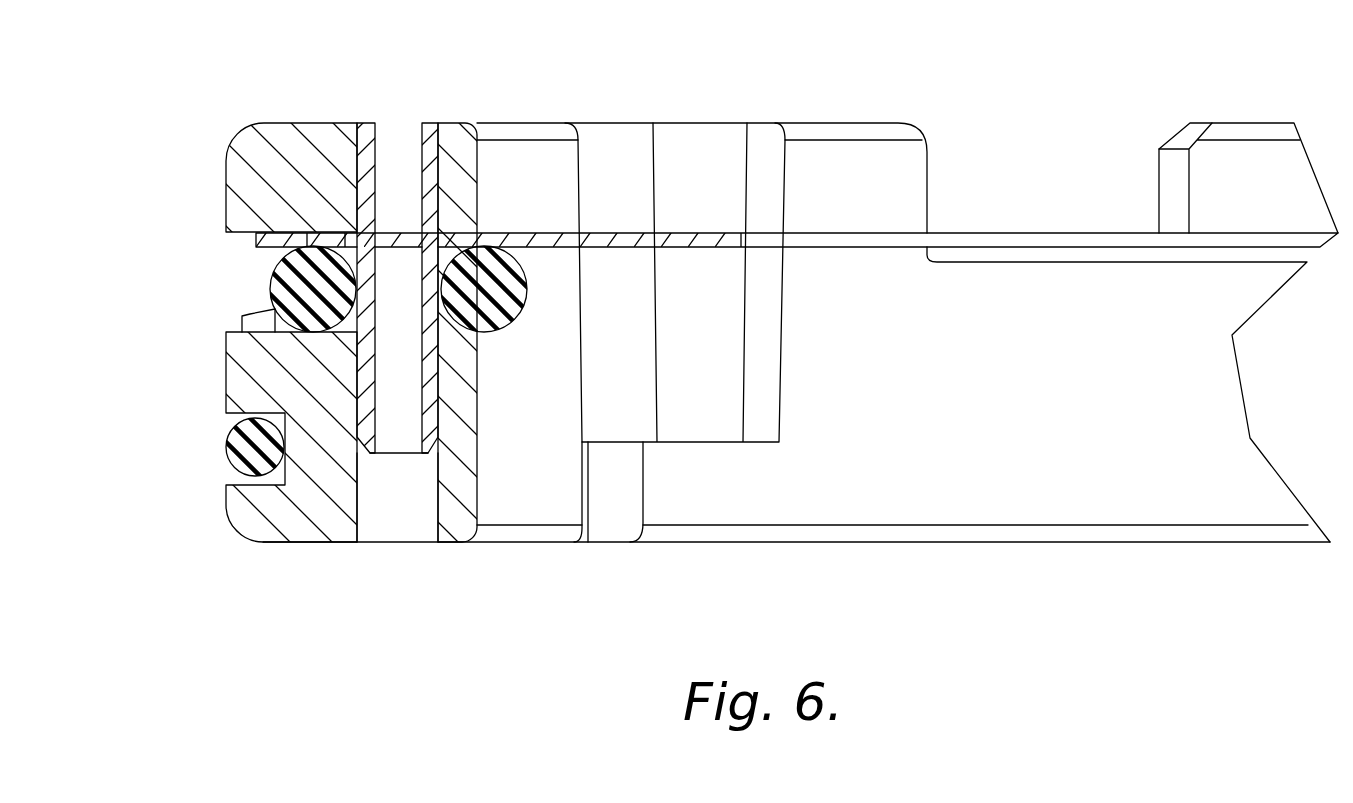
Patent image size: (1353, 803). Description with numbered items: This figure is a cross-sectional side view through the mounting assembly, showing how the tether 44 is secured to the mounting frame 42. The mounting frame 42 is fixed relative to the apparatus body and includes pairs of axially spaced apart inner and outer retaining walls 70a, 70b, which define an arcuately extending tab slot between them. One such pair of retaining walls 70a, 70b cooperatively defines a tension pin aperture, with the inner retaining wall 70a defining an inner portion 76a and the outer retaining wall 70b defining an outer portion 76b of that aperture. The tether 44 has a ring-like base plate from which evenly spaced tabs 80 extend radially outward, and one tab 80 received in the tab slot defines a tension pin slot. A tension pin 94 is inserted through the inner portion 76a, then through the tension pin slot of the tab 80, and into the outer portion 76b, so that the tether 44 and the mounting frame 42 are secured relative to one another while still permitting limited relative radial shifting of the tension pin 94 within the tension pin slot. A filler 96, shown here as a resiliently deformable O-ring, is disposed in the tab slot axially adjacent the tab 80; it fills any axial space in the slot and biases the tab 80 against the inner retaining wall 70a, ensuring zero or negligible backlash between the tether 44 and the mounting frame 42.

The mounting frame 42 is at (858, 124).
The tether 44 is at (693, 240).
The inner retaining wall 70a is at (290, 132).
The outer retaining wall 70b is at (283, 528).
The inner portion of tension pin aperture 76a is at (439, 117).
The outer portion of tension pin aperture 76b is at (410, 540).
The tab 80 is at (275, 240).
The tension pin 94 is at (369, 163).
The filler 96 is at (508, 314).